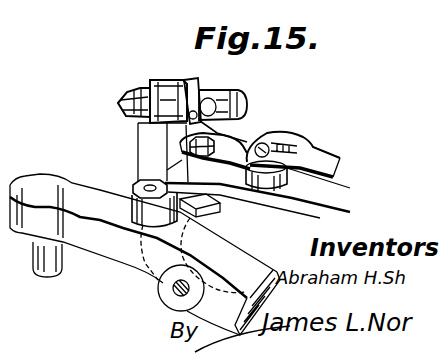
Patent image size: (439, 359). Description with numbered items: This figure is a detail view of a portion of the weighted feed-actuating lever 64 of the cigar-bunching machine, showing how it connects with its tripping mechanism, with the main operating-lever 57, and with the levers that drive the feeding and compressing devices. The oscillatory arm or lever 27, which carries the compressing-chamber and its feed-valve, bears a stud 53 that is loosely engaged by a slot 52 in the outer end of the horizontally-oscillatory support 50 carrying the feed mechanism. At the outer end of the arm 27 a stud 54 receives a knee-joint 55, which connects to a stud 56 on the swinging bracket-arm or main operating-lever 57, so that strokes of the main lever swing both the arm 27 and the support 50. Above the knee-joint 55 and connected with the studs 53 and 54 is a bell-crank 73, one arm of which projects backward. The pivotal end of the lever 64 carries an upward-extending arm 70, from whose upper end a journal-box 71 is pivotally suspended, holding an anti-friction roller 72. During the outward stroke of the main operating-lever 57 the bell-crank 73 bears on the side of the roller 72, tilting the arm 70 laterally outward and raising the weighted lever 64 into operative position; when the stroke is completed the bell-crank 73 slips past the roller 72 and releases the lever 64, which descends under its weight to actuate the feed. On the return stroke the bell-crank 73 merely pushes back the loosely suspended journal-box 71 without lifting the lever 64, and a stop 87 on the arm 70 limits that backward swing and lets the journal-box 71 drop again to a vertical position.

The oscillatory arm or lever 27 is at (257, 200).
The horizontally-oscillatory support 50 is at (333, 153).
The slot 52 is at (297, 140).
The stud 53 is at (246, 186).
The stud 54 is at (184, 141).
The knee-joint 55 is at (154, 210).
The stud 56 is at (134, 187).
The main operating-lever 57 is at (145, 254).
The feed-actuating lever 64 is at (216, 313).
The upward-extending arm 70 is at (138, 150).
The journal-box 71 is at (215, 104).
The anti-friction roller 72 is at (228, 96).
The bell-crank 73 is at (238, 157).
The stop 87 is at (122, 116).